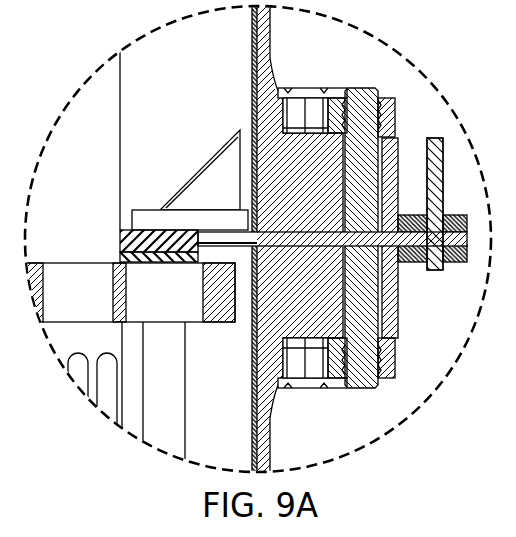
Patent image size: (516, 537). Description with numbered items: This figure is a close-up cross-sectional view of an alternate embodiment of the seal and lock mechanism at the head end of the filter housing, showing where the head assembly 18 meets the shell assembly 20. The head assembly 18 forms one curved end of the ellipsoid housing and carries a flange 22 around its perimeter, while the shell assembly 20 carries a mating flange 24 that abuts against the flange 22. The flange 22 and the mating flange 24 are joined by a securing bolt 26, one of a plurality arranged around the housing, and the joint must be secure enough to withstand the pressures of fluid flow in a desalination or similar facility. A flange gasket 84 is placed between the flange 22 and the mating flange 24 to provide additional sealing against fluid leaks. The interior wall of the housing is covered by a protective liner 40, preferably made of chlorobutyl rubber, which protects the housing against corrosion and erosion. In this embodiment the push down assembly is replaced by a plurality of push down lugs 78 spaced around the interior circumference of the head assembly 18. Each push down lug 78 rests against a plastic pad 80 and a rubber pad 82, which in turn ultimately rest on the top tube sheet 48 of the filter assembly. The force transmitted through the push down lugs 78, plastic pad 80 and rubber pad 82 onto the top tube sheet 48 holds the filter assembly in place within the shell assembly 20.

The head assembly 18 is at (270, 40).
The shell assembly 20 is at (270, 438).
The flange 22 is at (400, 165).
The mating flange 24 is at (400, 322).
The securing bolt 26 is at (362, 88).
The protective liner 40 is at (251, 59).
The top tube sheet 48 is at (218, 322).
The push down lug 78 is at (160, 220).
The plastic pad 80 is at (120, 240).
The rubber pad 82 is at (120, 258).
The flange gasket 84 is at (303, 238).